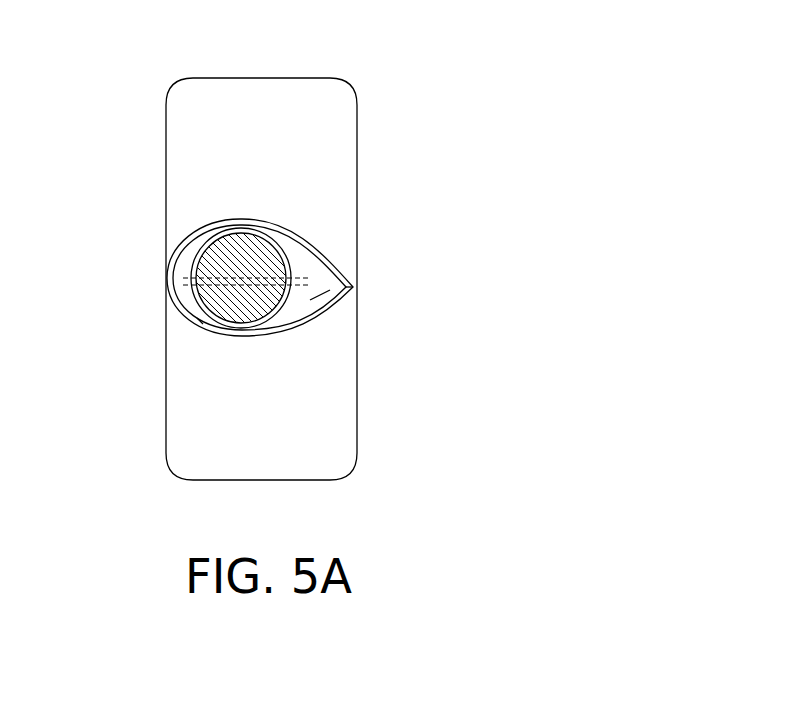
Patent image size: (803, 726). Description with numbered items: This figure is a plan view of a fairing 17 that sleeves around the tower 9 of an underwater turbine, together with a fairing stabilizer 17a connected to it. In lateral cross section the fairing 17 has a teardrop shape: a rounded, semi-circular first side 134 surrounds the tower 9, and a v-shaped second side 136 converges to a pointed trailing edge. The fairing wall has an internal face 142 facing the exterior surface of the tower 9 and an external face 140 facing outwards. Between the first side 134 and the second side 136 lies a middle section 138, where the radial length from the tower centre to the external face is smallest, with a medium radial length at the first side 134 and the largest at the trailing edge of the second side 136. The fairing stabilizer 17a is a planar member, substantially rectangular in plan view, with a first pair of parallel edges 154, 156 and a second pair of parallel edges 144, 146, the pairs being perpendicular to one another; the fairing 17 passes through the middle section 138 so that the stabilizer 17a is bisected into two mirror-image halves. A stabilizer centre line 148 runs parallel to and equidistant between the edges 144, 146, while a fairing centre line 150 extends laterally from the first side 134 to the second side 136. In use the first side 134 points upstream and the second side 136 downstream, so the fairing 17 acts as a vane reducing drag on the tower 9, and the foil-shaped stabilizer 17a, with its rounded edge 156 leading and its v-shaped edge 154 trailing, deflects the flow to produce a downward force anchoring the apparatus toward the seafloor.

The tower 9 is at (197, 318).
The fairing 17 is at (303, 297).
The fairing stabilizer 17a is at (267, 277).
The first side 134 is at (267, 260).
The second side 136 is at (350, 272).
The middle section 138 is at (248, 227).
The external face 140 is at (299, 223).
The internal face 142 is at (302, 257).
The edge 144 is at (258, 480).
The edge 146 is at (262, 78).
The stabilizer centre line 148 is at (192, 289).
The fairing centre line 150 is at (222, 278).
The edge 154 is at (357, 362).
The edge 156 is at (163, 390).